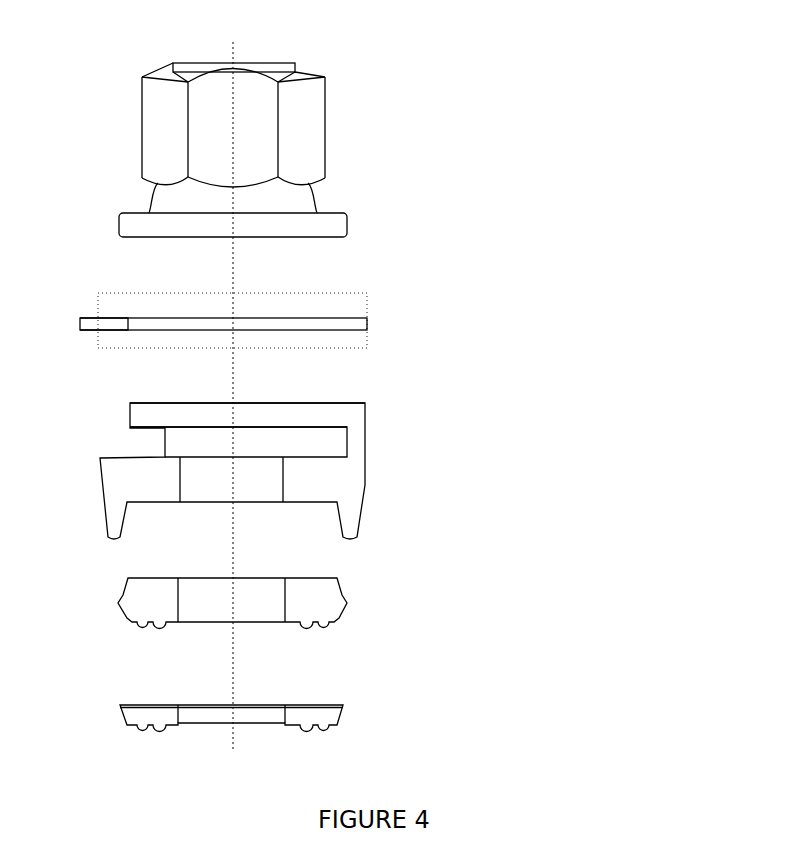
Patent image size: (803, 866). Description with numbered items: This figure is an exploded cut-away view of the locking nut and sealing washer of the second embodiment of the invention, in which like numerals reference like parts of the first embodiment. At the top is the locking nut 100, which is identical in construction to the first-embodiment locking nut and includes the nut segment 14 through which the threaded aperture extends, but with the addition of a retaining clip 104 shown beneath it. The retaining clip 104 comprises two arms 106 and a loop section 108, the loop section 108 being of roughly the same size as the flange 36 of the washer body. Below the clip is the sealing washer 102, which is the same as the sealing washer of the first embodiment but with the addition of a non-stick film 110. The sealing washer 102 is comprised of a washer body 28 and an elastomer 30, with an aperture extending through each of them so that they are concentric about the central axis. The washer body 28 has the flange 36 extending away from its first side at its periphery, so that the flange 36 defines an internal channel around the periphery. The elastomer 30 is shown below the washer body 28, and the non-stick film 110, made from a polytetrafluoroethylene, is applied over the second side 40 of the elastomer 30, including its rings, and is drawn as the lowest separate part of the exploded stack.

The locking nut 100 is at (309, 120).
The nut segment 14 is at (233, 125).
The retaining clip 104 is at (260, 300).
The arms 106 is at (95, 318).
The loop section 108 is at (243, 318).
The sealing washer 102 is at (284, 455).
The washer body 28 is at (130, 457).
The flange 36 is at (260, 417).
The elastomer 30 is at (266, 620).
The second side of the elastomer 40 is at (193, 625).
The non-stick film 110 is at (343, 713).